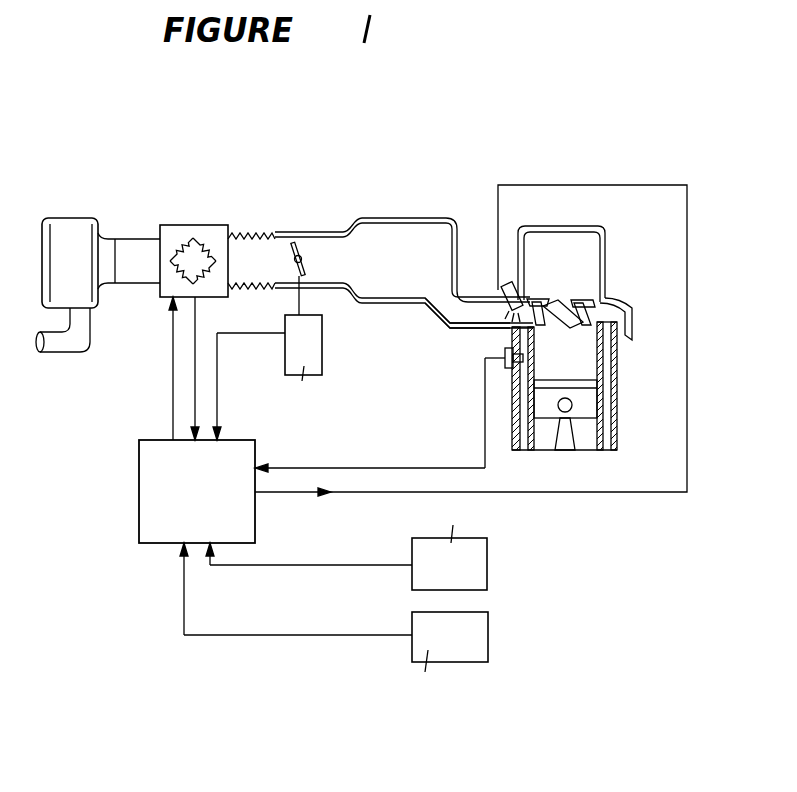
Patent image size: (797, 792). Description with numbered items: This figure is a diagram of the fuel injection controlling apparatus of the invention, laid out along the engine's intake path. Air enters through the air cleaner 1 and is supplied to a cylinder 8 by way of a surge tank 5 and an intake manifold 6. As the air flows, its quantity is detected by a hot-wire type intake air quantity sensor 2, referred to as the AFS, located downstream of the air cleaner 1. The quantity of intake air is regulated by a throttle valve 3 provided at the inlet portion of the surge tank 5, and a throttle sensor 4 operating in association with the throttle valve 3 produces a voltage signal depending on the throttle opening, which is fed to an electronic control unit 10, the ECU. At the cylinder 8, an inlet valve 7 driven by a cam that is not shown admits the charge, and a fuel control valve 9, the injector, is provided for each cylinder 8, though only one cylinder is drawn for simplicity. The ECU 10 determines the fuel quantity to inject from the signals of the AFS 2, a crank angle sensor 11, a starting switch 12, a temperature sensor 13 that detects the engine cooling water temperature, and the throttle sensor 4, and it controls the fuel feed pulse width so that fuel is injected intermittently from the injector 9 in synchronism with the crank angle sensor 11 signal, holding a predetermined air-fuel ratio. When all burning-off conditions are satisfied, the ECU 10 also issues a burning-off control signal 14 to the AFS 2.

The air cleaner 1 is at (75, 218).
The hot-wire type intake air quantity sensor 2 is at (197, 225).
The throttle valve 3 is at (298, 243).
The throttle sensor 4 is at (322, 340).
The surge tank 5 is at (404, 255).
The intake manifold 6 is at (452, 305).
The inlet valve 7 is at (548, 305).
The cylinder 8 is at (572, 353).
The fuel control valve 9 is at (505, 290).
The electronic control unit 10 is at (139, 510).
The crank angle sensor 11 is at (487, 558).
The starting switch 12 is at (488, 632).
The temperature sensor 13 is at (505, 355).
The burning-off control signal 14 is at (173, 385).